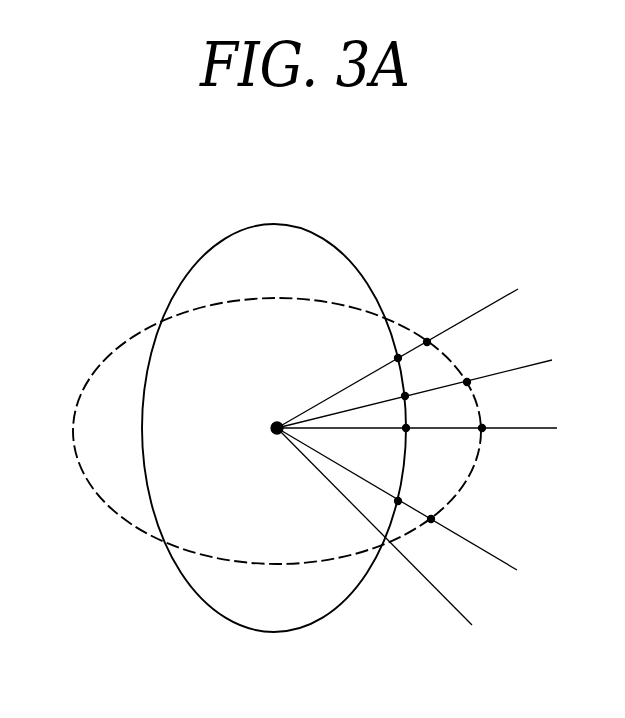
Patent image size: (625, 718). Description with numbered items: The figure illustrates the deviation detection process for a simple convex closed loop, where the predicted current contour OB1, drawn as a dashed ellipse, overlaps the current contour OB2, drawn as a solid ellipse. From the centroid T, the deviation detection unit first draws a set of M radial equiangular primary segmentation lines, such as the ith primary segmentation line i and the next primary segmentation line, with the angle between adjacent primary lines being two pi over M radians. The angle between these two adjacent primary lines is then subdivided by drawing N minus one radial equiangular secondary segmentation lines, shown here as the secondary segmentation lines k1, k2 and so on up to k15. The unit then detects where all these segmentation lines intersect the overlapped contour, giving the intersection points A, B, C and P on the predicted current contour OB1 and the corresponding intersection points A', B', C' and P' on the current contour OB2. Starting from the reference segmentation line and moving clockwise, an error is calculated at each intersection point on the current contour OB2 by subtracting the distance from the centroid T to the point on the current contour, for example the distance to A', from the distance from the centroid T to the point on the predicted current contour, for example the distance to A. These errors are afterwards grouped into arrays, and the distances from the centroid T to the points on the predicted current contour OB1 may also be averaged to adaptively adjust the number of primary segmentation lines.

The predicted current contour OB1 is at (118, 515).
The current contour OB2 is at (312, 228).
The centroid T is at (262, 428).
The ith primary segmentation line i is at (403, 349).
The secondary segmentation line k1 is at (433, 387).
The secondary segmentation line k2 is at (435, 438).
The secondary segmentation line k15 is at (429, 514).
The intersection point on predicted current contour A is at (482, 328).
The intersection point on current contour A' is at (412, 301).
The intersection point on predicted current contour B is at (521, 392).
The intersection point on current contour B' is at (357, 361).
The intersection point on predicted current contour C is at (527, 468).
The intersection point on current contour C' is at (331, 391).
The intersection point on predicted current contour P is at (479, 523).
The intersection point on current contour P' is at (351, 498).